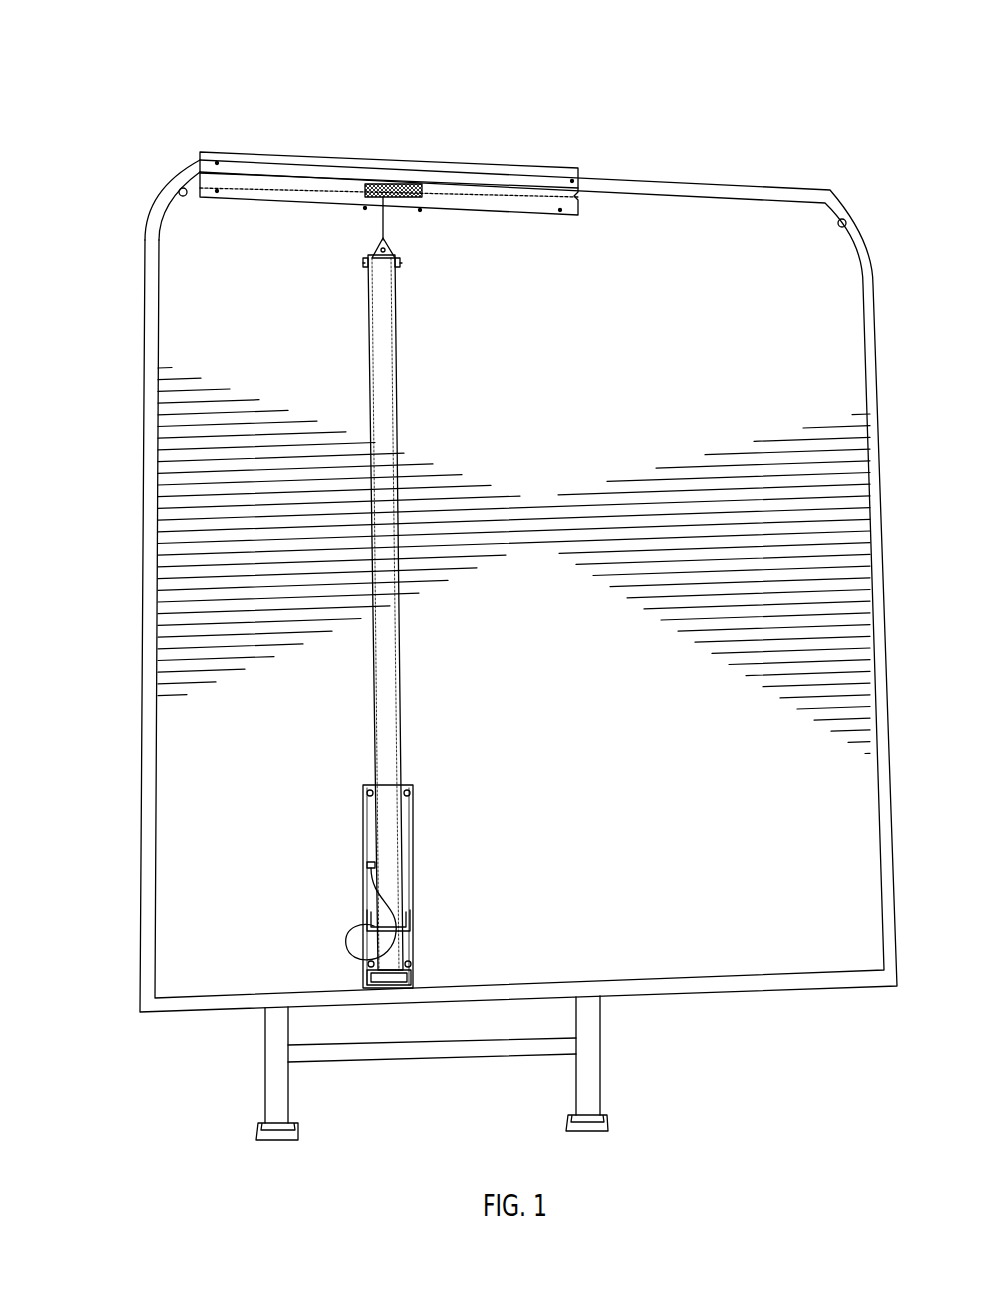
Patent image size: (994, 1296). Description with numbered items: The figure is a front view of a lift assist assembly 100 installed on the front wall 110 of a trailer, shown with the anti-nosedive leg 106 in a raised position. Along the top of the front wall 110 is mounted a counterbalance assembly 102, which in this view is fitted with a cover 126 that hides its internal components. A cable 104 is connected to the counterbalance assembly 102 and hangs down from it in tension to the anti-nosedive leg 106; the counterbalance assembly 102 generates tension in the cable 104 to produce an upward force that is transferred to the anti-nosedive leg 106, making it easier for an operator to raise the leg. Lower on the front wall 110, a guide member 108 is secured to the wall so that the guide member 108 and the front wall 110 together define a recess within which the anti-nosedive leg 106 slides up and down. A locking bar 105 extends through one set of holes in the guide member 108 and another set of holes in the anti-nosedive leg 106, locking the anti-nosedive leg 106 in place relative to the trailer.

The lift assist assembly 100 is at (193, 65).
The counterbalance assembly 102 is at (116, 226).
The cable 104 is at (382, 217).
The locking bar 105 is at (413, 912).
The anti-nosedive leg 106 is at (377, 713).
The guide member 108 is at (363, 905).
The front wall 110 is at (853, 572).
The cover 126 is at (530, 167).